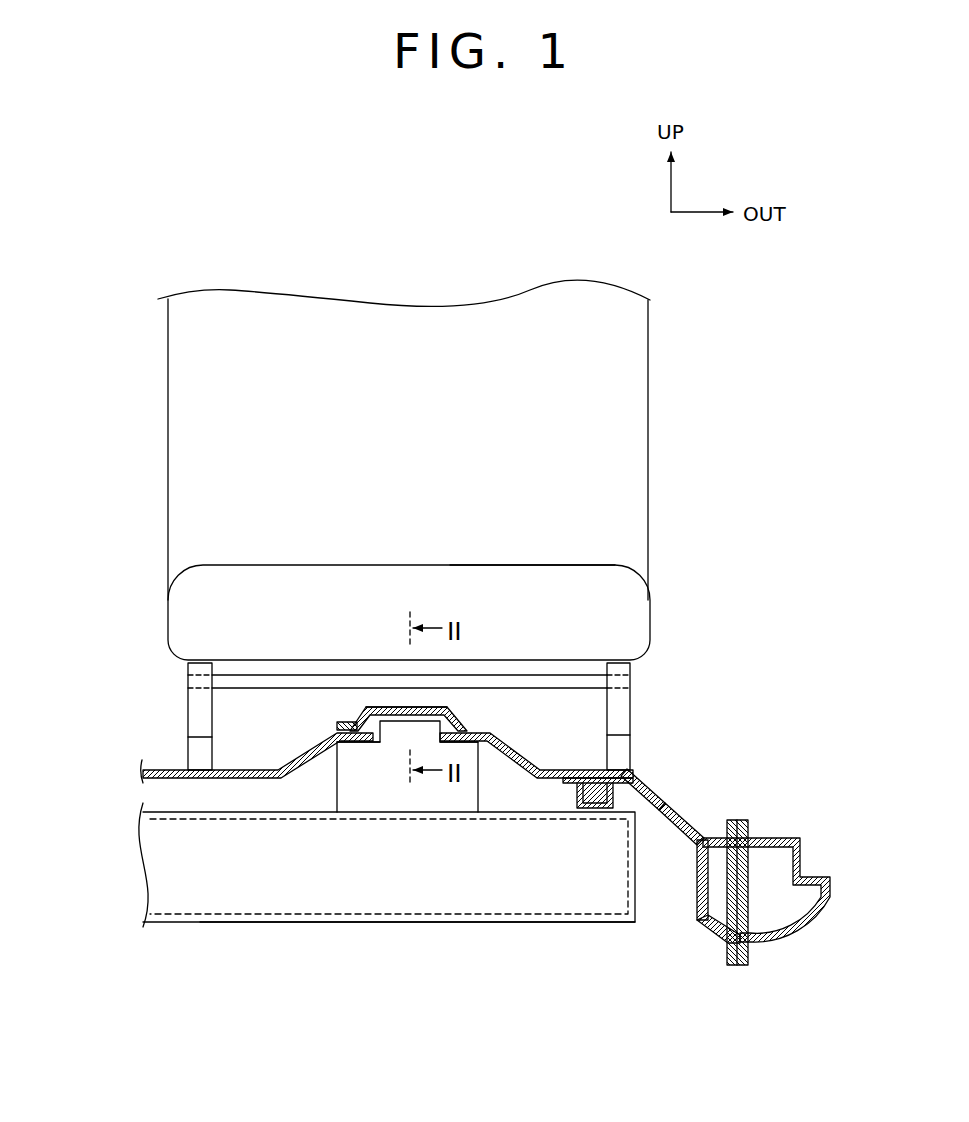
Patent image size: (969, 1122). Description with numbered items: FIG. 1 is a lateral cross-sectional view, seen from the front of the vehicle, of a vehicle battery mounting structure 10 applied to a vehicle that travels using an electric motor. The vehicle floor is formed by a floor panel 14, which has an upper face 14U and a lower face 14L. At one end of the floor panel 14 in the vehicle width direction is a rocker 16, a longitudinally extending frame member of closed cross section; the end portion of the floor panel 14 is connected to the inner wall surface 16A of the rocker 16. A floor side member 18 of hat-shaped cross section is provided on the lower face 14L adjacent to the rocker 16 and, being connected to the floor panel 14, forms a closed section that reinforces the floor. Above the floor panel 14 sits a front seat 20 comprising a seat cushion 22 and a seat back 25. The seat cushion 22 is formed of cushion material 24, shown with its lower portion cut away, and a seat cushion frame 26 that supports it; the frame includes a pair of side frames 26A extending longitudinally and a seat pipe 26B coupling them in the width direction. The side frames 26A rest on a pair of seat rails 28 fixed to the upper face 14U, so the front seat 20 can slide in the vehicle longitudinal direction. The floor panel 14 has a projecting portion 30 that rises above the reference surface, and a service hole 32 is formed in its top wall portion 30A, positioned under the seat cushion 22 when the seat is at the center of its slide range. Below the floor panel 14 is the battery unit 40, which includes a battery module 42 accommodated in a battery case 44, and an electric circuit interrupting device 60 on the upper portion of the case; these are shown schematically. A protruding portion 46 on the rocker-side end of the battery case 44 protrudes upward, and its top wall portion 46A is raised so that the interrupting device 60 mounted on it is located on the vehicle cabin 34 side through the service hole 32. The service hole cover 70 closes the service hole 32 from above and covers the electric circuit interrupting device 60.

The vehicle battery mounting structure 10 is at (485, 792).
The floor panel 14 is at (703, 829).
The upper face of the floor panel 14U is at (688, 823).
The lower face of the floor panel 14L is at (676, 828).
The rocker 16 is at (770, 901).
The inner wall surface 16A is at (697, 900).
The floor side member 18 is at (614, 794).
The front seat 20 is at (472, 443).
The seat cushion 22 is at (457, 607).
The cushion material 24 is at (645, 567).
The seat back 25 is at (648, 433).
The seat cushion frame 26 is at (410, 712).
The side frames 26A is at (188, 716).
The seat pipe 26B is at (245, 689).
The seat rails 28 is at (188, 750).
The projecting portion 30 is at (387, 786).
The top wall portion of the projecting portion 30A is at (505, 742).
The service hole 32 is at (447, 674).
The vehicle cabin 34 is at (410, 254).
The battery unit 40 is at (387, 835).
The battery module 42 is at (275, 915).
The battery case 44 is at (332, 924).
The protruding portion 46 is at (360, 716).
The top wall portion of the protruding portion 46A is at (352, 731).
The electric circuit interrupting device 60 is at (359, 722).
The service hole cover 70 is at (400, 707).